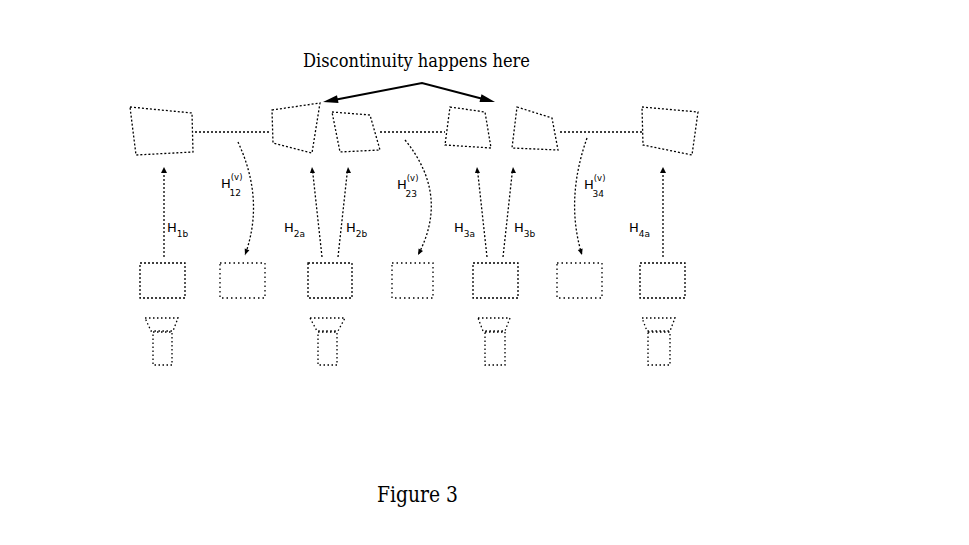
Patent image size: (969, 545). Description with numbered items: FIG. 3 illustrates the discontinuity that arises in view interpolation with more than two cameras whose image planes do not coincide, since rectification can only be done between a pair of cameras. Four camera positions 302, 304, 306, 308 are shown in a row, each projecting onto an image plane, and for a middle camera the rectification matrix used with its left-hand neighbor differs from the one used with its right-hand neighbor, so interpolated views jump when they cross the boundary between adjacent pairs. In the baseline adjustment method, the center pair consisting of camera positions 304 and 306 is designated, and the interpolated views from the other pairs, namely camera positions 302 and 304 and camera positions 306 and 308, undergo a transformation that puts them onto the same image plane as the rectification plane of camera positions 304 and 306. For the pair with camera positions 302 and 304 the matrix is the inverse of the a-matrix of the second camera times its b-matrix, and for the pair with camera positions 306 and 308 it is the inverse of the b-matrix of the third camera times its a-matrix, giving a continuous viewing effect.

The camera position 302 is at (155, 358).
The camera position 304 is at (318, 357).
The camera position 306 is at (483, 355).
The camera position 308 is at (650, 355).